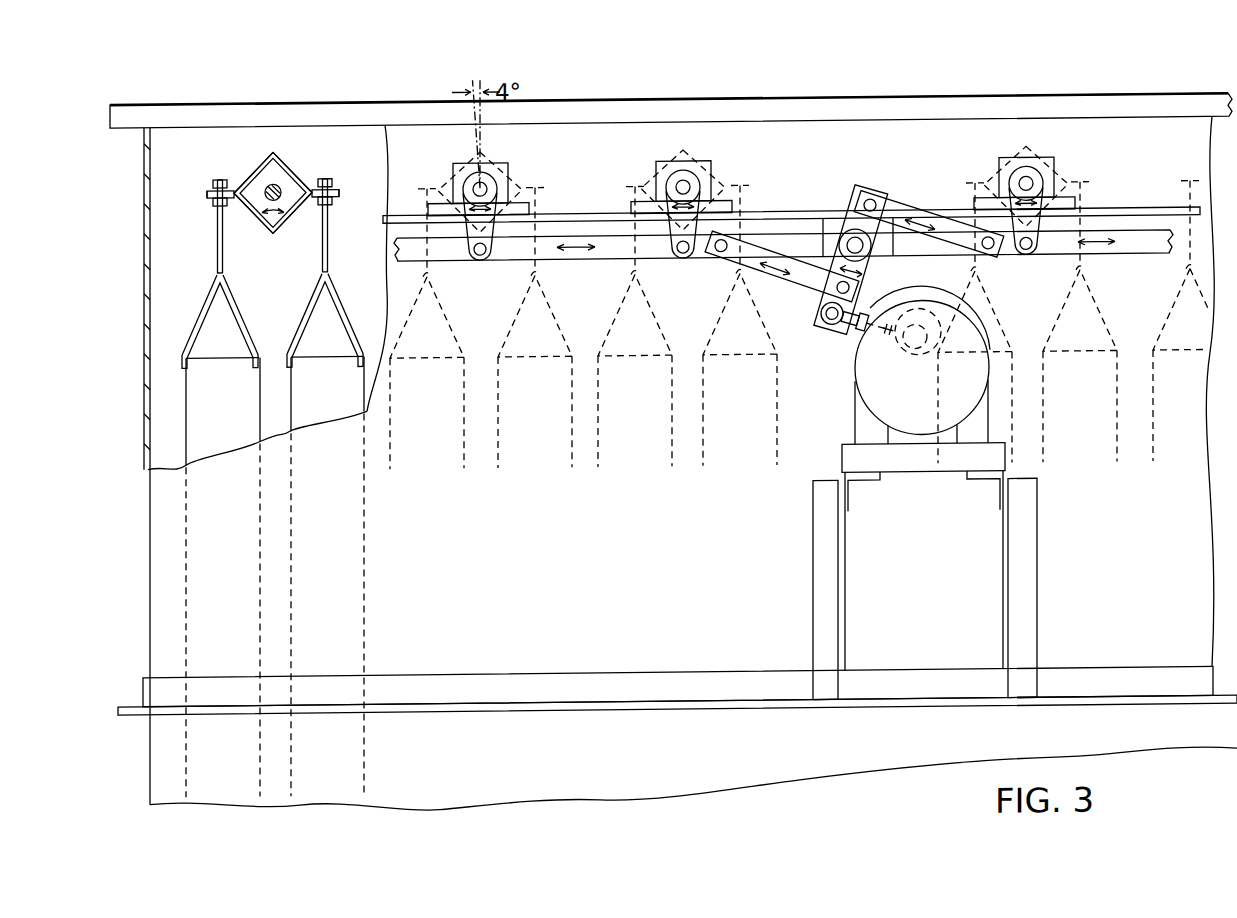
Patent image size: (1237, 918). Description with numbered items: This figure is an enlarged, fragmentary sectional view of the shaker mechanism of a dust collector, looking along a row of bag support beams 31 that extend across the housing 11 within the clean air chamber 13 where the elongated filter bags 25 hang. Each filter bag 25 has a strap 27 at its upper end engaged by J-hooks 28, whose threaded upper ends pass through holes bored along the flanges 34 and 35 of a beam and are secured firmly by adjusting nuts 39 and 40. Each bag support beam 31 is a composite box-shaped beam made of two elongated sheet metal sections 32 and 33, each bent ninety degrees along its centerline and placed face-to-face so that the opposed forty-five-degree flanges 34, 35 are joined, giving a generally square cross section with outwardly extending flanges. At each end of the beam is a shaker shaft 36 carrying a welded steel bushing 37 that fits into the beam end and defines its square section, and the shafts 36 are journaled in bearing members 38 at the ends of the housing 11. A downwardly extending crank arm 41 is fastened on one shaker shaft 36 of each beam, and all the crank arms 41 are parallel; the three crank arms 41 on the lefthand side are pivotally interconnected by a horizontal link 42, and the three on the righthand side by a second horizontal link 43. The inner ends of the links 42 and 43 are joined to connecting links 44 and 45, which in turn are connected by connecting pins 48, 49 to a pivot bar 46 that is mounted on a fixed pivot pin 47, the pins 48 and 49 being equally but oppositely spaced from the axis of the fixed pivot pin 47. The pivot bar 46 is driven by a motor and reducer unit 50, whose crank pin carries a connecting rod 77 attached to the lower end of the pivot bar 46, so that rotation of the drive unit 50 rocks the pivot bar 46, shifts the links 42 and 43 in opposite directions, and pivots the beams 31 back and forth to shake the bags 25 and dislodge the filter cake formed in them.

The housing 11 is at (140, 297).
The clean air chamber 13 is at (160, 384).
The filter bags 25 is at (218, 446).
The strap 27 is at (310, 314).
The J-hooks 28 is at (217, 262).
The bag support beams 31 is at (255, 153).
The sheet metal section 32 is at (288, 160).
The sheet metal section 33 is at (273, 232).
The flange 34 is at (210, 188).
The flange 35 is at (207, 191).
The shaker shaft 36 is at (278, 183).
The steel bushing 37 is at (250, 176).
The bearing members 38 is at (458, 166).
The adjusting nut 39 is at (218, 176).
The adjusting nut 40 is at (219, 204).
The crank arm 41 is at (467, 234).
The horizontal link 42 is at (552, 256).
The second horizontal link 43 is at (1140, 254).
The connecting link 44 is at (798, 282).
The connecting link 45 is at (912, 205).
The pivot bar 46 is at (853, 224).
The fixed pivot pin 47 is at (847, 247).
The connecting pin 48 is at (870, 203).
The connecting pin 49 is at (849, 291).
The motor and reducer unit 50 is at (920, 422).
The connecting rod 77 is at (843, 340).